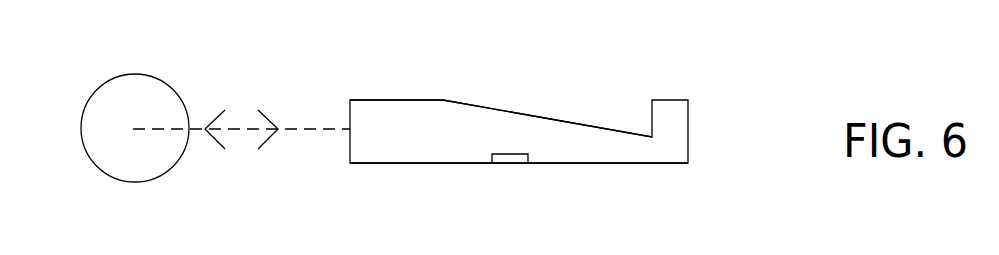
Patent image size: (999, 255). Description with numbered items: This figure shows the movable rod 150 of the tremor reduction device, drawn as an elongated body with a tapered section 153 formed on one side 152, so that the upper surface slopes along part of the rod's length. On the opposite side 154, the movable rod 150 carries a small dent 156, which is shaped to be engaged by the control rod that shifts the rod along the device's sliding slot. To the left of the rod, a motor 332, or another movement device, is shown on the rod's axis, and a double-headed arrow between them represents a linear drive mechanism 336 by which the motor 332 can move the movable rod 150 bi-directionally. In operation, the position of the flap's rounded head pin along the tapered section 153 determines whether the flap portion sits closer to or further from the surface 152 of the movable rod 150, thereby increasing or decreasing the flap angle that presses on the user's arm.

The movable rod 150 is at (612, 75).
The side 152 is at (418, 98).
The tapered section 153 is at (522, 112).
The side 154 is at (438, 163).
The dent 156 is at (510, 161).
The motor 332 is at (118, 75).
The linear drive mechanism 336 is at (242, 112).